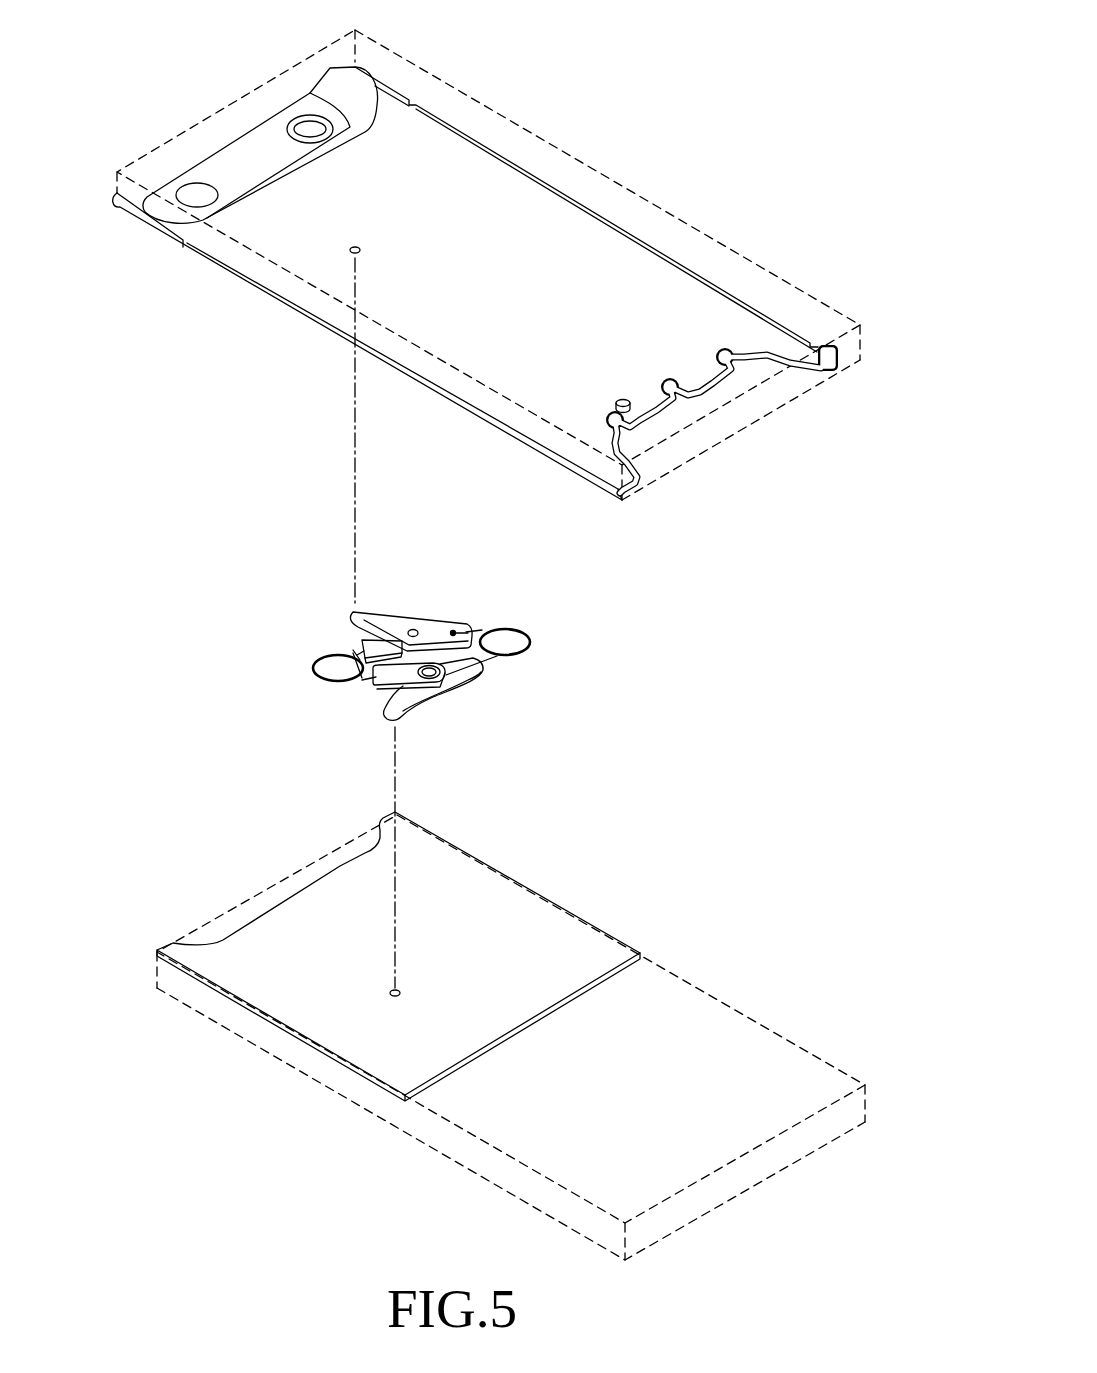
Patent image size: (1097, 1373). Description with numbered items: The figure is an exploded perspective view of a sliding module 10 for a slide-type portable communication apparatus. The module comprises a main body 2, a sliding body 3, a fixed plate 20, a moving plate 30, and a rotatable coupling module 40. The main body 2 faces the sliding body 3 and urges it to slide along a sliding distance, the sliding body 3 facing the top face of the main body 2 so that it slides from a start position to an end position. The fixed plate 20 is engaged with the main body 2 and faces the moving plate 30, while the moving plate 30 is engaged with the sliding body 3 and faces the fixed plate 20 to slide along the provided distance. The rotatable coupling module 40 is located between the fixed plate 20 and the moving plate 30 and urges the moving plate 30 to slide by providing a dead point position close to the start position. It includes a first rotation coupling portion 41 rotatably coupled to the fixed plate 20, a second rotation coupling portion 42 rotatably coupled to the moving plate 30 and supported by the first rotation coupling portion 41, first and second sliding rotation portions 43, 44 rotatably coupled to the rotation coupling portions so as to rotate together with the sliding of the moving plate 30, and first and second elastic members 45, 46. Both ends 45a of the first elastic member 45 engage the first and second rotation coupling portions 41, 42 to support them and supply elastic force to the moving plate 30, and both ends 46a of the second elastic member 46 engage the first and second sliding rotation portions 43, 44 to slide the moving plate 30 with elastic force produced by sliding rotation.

The sliding module 10 is at (848, 62).
The main body 2 is at (683, 995).
The sliding body 3 is at (665, 212).
The fixed plate 20 is at (562, 925).
The moving plate 30 is at (500, 193).
The rotatable coupling module 40 is at (633, 540).
The first rotation coupling portion 41 is at (402, 717).
The second rotation coupling portion 42 is at (360, 612).
The first sliding rotation portion 43 is at (390, 680).
The second sliding rotation portion 44 is at (380, 647).
The first elastic member 45 is at (500, 637).
The both ends of the first elastic member 45a is at (453, 632).
The second elastic member 46 is at (352, 678).
The both ends of the second elastic member 46a is at (360, 677).